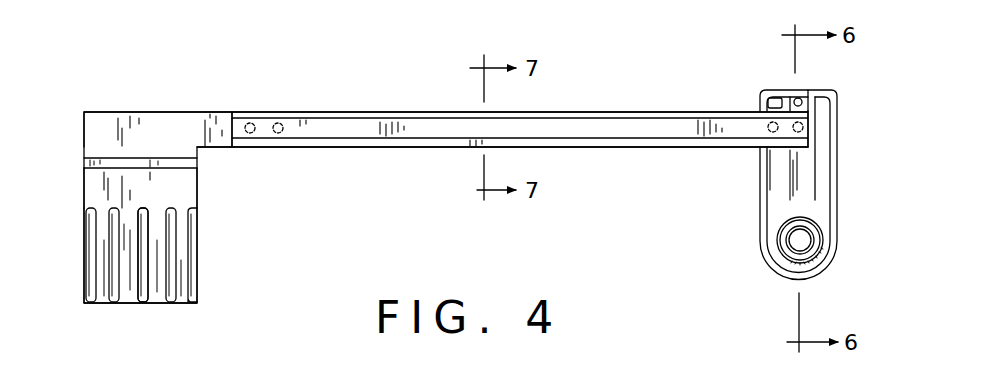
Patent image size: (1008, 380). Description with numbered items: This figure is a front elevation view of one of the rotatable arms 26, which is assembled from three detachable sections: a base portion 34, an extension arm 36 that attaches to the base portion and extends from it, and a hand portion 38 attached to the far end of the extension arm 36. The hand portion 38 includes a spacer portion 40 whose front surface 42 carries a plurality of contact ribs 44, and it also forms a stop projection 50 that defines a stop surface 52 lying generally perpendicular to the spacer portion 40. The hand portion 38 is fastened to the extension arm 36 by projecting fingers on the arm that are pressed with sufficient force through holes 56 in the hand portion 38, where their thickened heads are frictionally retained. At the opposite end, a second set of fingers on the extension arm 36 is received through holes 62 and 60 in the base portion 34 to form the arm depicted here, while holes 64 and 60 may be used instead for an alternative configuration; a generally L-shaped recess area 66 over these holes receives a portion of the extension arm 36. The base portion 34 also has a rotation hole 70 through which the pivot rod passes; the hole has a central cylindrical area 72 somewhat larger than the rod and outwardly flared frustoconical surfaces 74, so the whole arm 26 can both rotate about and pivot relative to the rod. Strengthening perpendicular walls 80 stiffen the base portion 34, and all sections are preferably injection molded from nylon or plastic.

The rotatable arm 26 is at (337, 224).
The base portion 34 is at (785, 190).
The extension arm 36 is at (364, 124).
The hand portion 38 is at (143, 128).
The spacer portion 40 is at (163, 308).
The front surface 42 is at (137, 268).
The contact ribs 44 is at (194, 250).
The stop projection 50 is at (100, 163).
The stop surface 52 is at (165, 178).
The holes 56 is at (278, 122).
The hole 60 is at (821, 133).
The hole 62 is at (768, 132).
The hole 64 is at (801, 100).
The recess area 66 is at (791, 88).
The rotation hole 70 is at (814, 232).
The central cylindrical area 72 is at (768, 263).
The frustoconical surfaces 74 is at (821, 260).
The strengthening perpendicular walls 80 is at (765, 92).